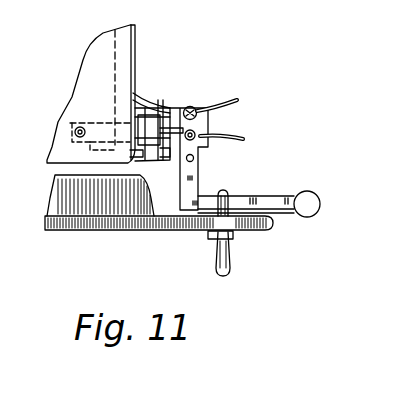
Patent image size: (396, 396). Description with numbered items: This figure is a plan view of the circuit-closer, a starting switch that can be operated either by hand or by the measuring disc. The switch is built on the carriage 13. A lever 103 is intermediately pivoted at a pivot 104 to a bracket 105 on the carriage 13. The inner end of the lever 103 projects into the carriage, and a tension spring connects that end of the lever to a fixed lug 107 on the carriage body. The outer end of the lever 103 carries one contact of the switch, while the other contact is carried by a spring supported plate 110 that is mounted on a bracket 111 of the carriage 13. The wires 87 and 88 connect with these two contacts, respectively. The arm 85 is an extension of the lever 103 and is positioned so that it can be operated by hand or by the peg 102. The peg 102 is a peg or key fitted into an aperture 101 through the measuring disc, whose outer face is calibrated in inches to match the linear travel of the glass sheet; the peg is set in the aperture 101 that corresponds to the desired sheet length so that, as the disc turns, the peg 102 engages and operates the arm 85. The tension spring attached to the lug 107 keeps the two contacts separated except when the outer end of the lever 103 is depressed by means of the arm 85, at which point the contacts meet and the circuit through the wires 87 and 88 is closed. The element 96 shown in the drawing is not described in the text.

The carriage 13 is at (129, 54).
The fixed lug 107 is at (75, 130).
The lever 103 is at (129, 118).
The bracket 105 is at (158, 110).
The pivot 104 is at (167, 108).
The bracket 111 is at (200, 109).
The wire 88 is at (238, 104).
The wire 87 is at (243, 139).
The spring supported plate 110 is at (203, 152).
The arm 85 is at (236, 201).
The base 96 is at (80, 229).
The aperture 101 is at (249, 231).
The peg 102 is at (229, 258).